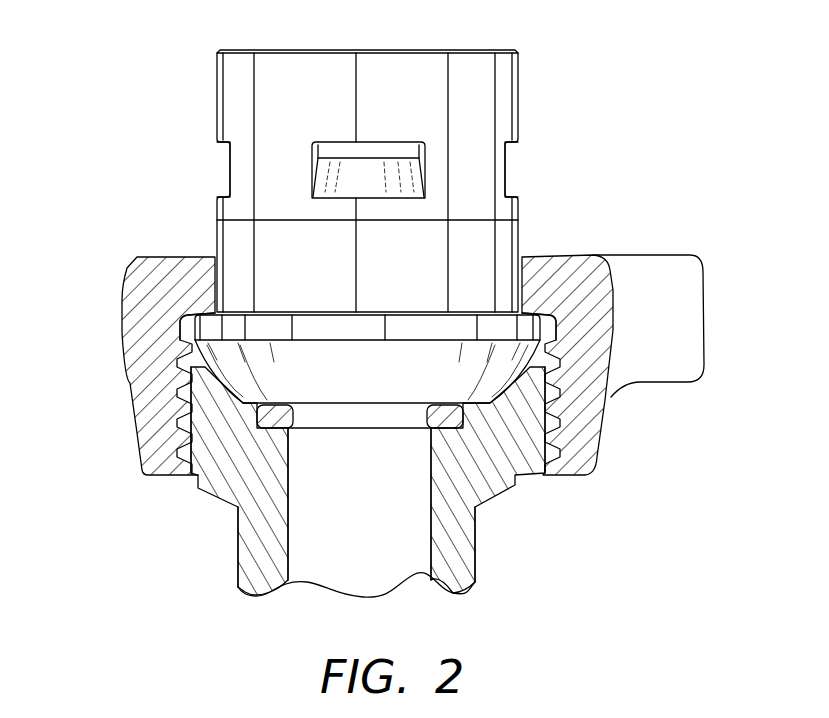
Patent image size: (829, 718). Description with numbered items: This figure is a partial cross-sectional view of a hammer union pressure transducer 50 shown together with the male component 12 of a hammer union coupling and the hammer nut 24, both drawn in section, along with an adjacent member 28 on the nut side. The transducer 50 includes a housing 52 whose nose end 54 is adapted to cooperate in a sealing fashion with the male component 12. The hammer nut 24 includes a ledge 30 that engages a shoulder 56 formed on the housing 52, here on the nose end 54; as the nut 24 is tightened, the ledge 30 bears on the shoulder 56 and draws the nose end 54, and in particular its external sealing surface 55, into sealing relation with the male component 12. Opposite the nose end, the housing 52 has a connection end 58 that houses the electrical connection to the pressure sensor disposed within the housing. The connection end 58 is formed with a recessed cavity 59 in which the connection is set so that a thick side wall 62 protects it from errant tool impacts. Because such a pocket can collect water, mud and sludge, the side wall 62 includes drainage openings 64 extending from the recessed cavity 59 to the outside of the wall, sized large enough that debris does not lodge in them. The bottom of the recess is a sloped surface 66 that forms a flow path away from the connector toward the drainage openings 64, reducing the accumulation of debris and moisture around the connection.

The male component 12 is at (477, 583).
The hammer nut 24 is at (135, 256).
The mounting flange 28 is at (670, 253).
The ledge 30 is at (538, 313).
The hammer union pressure transducer 50 is at (122, 62).
The housing 52 is at (215, 125).
The nose end 54 is at (374, 390).
The external sealing surface 55 is at (533, 388).
The shoulder 56 is at (208, 312).
The connection end 58 is at (521, 57).
The recessed cavity 59 is at (354, 149).
The side wall 62 is at (522, 103).
The drainage opening 64 is at (229, 172).
The sloped surface 66 is at (371, 187).